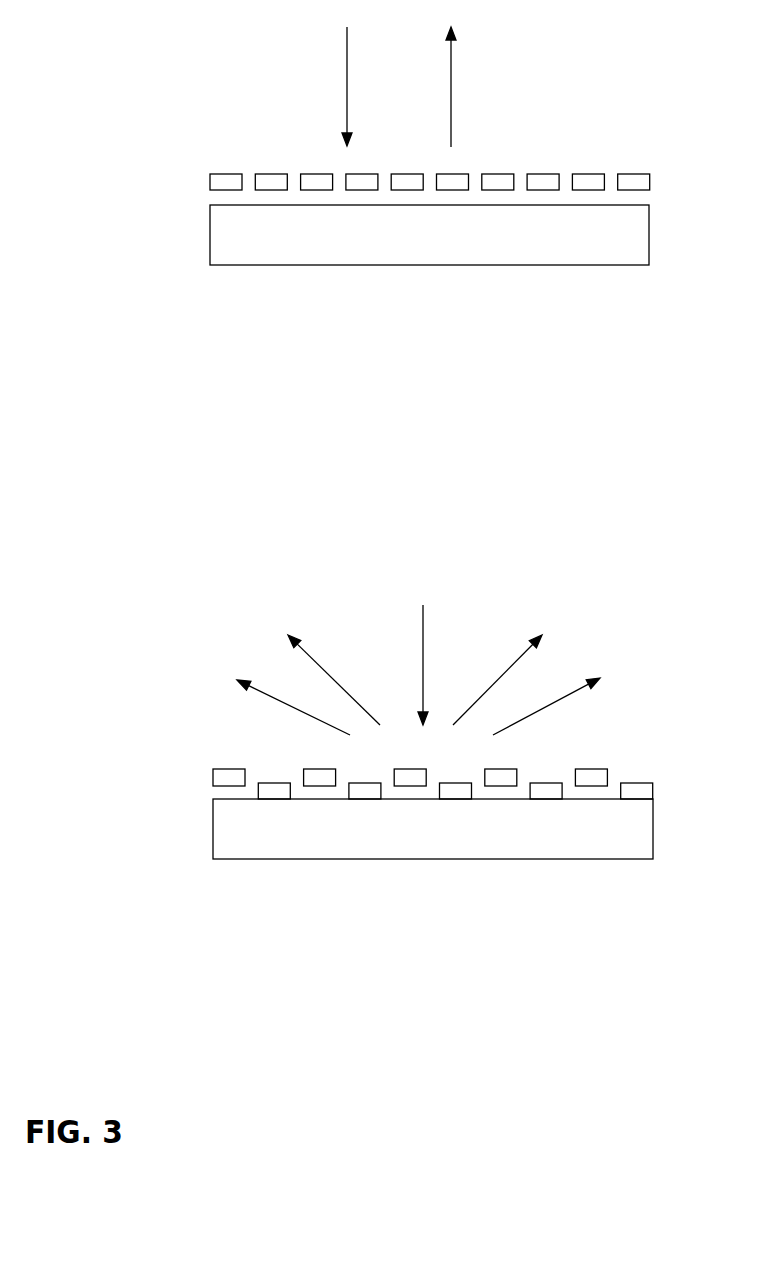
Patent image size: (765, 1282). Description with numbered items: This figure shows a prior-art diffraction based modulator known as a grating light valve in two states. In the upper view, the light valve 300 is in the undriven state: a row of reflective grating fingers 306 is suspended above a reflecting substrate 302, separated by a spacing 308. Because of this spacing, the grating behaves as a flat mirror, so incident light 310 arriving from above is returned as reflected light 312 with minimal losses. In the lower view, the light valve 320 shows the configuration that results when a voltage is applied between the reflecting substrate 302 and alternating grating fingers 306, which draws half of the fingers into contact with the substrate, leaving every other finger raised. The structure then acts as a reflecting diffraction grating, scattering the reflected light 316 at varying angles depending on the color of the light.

The light valve 300 is at (368, 208).
The reflecting substrate 302 is at (210, 245).
The grating fingers 306 is at (468, 163).
The spacing 308 is at (210, 175).
The incident light 310 is at (304, 86).
The reflected light 312 is at (499, 87).
The scattered reflected light 316 is at (573, 709).
The light valve 320 is at (436, 780).